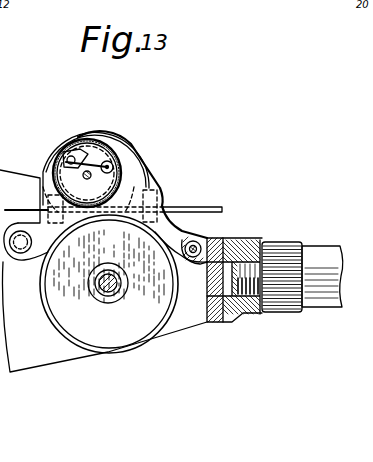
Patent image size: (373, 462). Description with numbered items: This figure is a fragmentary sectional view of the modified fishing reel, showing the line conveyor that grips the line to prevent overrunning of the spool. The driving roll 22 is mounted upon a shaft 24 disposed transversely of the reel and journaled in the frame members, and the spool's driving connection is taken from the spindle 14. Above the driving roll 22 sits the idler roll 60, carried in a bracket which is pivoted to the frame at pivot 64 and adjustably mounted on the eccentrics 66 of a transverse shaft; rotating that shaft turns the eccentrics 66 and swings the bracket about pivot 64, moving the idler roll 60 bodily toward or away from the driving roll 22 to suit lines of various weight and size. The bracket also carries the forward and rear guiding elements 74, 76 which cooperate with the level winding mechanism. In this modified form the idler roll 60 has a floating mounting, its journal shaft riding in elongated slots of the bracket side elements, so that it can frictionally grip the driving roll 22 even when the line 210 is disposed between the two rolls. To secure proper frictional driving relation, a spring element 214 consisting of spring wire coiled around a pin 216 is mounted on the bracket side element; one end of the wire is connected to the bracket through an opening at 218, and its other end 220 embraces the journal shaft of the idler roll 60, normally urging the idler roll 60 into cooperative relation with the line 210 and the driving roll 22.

The spindle 14 is at (107, 120).
The roll 22 is at (158, 330).
The shaft 24 is at (108, 292).
The idler roll 60 is at (140, 136).
The pivot 64 is at (203, 238).
The eccentrics 66 is at (17, 231).
The forward guiding element 74 is at (160, 188).
The rear guiding element 76 is at (38, 178).
The line 210 is at (192, 207).
The spring element 214 is at (98, 156).
The pin 216 is at (68, 165).
The connection opening 218 is at (80, 152).
The spring wire end 220 is at (150, 158).